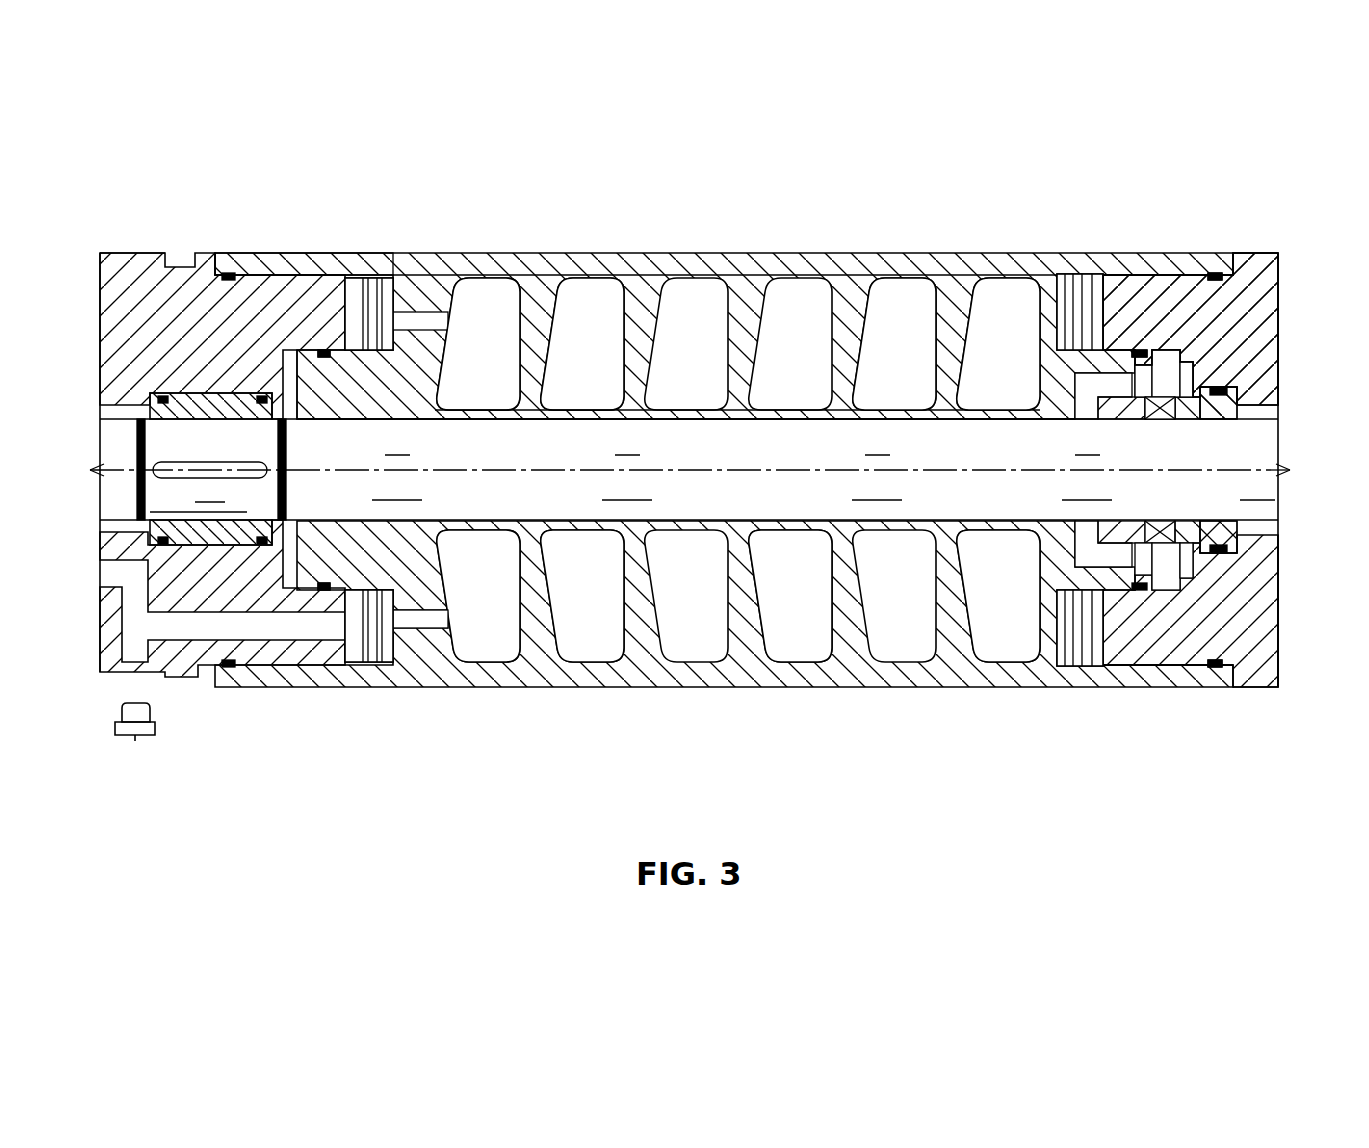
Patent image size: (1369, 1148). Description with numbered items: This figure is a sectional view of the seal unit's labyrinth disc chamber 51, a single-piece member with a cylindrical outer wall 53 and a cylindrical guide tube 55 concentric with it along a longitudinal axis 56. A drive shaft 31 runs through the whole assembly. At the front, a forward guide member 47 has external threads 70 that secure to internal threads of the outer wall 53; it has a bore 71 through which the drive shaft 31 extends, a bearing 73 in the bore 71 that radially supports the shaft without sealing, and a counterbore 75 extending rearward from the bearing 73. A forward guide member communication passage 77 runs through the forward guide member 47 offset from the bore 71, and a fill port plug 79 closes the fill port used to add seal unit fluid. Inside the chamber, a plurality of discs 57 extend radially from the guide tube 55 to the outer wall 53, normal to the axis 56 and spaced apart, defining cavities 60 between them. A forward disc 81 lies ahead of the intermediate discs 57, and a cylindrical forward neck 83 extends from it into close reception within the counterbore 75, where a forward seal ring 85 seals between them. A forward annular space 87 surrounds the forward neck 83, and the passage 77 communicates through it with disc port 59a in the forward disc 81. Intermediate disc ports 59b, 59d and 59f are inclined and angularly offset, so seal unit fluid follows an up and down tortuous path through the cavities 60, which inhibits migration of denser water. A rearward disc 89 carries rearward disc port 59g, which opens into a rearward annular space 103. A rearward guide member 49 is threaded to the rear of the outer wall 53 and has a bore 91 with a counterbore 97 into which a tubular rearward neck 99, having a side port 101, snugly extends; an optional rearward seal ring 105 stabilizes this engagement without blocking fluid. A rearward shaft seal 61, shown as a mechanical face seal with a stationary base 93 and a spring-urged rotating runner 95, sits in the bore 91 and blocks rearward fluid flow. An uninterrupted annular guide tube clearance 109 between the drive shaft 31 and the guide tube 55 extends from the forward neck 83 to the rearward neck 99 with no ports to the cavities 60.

The drive shaft 31 is at (155, 445).
The forward guide member 47 is at (112, 262).
The rearward guide member 49 is at (1258, 640).
The labyrinth disc chamber 51 is at (683, 247).
The cylindrical outer wall 53 is at (788, 262).
The cylindrical guide tube 55 is at (557, 532).
The longitudinal axis 56 is at (682, 465).
The discs 57 is at (520, 600).
The disc port 59a is at (418, 305).
The intermediate disc port 59b is at (535, 288).
The intermediate disc port 59d is at (735, 600).
The intermediate disc port 59f is at (940, 330).
The rearward disc port 59g is at (1062, 320).
The cavities 60 is at (498, 362).
The rearward shaft seal 61 is at (1178, 428).
The external threads 70 is at (305, 275).
The bore 71 is at (195, 518).
The bearing 73 is at (195, 393).
The counterbore 75 is at (295, 568).
The forward guide member communication passage 77 is at (165, 632).
The fill port plug 79 is at (134, 740).
The forward disc 81 is at (430, 630).
The forward neck 83 is at (362, 605).
The forward seal ring 85 is at (323, 348).
The forward annular space 87 is at (368, 302).
The rearward disc 89 is at (1040, 595).
The bore 91 is at (1248, 520).
The stationary base 93 is at (1248, 405).
The rotating runner 95 is at (1200, 385).
The counterbore 97 is at (1185, 590).
The rearward neck 99 is at (1125, 345).
The port 101 is at (1093, 275).
The rearward annular space 103 is at (1085, 660).
The rearward seal ring 105 is at (1140, 352).
The annular guide tube clearance 109 is at (540, 418).